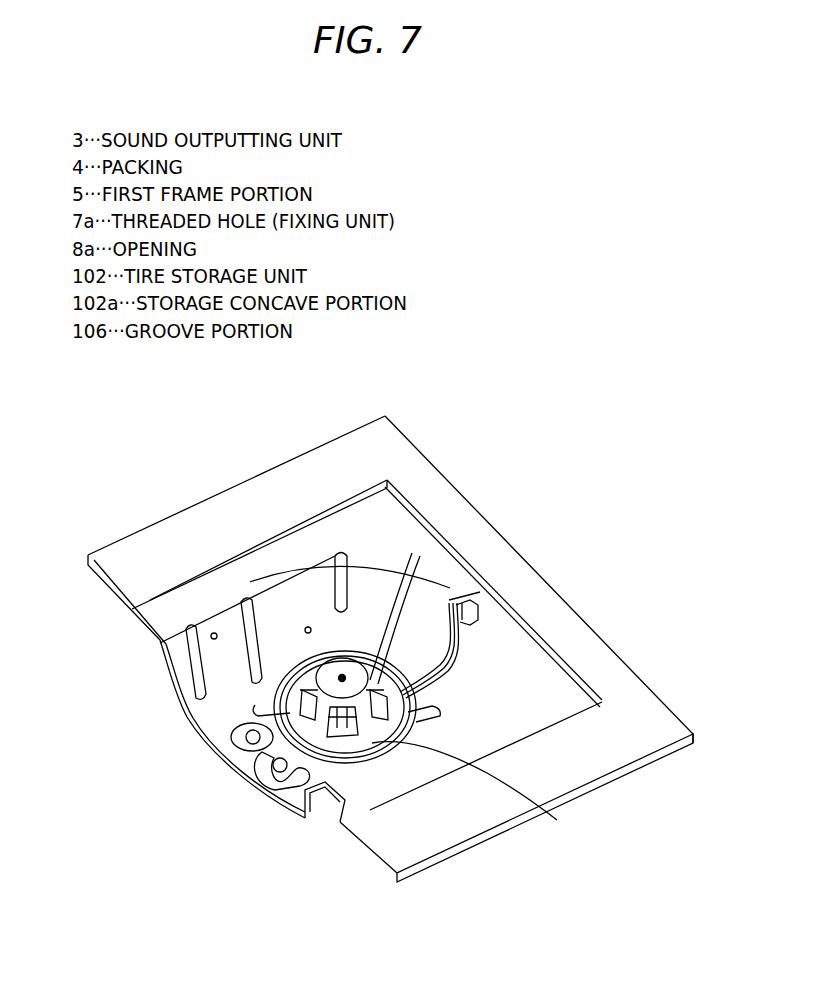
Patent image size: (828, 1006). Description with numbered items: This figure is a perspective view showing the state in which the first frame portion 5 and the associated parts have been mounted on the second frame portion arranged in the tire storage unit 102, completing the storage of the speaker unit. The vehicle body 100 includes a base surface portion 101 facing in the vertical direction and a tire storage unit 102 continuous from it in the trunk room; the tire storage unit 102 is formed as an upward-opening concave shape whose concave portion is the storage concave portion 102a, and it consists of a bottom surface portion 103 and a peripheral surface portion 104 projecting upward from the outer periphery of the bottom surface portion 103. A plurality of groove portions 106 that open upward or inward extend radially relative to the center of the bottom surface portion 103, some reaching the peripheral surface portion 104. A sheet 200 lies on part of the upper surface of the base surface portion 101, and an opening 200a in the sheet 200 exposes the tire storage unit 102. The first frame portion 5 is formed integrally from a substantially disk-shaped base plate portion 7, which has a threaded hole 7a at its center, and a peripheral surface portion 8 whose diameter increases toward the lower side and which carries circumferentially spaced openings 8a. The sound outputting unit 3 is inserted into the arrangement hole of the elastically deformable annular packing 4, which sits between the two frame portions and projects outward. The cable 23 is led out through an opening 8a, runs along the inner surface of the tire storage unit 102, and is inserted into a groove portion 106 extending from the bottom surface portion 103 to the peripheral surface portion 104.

The sound outputting unit 3 is at (362, 796).
The packing 4 is at (320, 752).
The first frame portion 5 is at (445, 762).
The base plate portion 7 is at (214, 633).
The threaded hole 7a is at (308, 627).
The peripheral surface portion 8 is at (415, 760).
The openings 8a is at (232, 727).
The cable 23 is at (472, 600).
The vehicle body 100 is at (538, 668).
The base surface portion 101 is at (548, 700).
The tire storage unit 102 is at (373, 597).
The storage concave portion 102a is at (260, 617).
The bottom surface portion 103 is at (222, 757).
The peripheral surface portion 104 is at (177, 607).
The groove portions 106 is at (342, 676).
The sheet 200 is at (570, 782).
The opening 200a is at (485, 612).